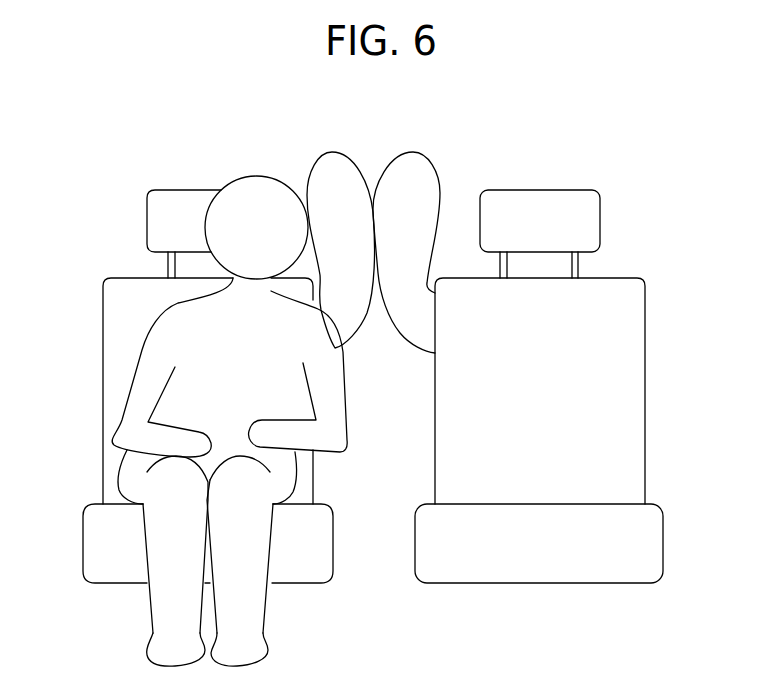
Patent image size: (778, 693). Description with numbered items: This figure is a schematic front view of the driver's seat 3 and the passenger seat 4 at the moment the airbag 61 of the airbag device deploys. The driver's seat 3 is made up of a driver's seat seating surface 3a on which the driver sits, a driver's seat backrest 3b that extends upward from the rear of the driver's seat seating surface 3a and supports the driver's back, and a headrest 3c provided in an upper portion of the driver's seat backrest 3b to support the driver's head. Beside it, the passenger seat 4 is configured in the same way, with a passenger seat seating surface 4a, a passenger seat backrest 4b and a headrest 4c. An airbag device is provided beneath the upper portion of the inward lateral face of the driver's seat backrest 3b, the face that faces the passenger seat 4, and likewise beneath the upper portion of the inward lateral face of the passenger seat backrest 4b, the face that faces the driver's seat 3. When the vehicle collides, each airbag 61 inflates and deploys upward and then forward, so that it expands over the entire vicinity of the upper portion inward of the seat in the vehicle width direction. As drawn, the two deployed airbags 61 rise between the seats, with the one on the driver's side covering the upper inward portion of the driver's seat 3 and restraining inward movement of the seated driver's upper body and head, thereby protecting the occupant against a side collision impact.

The driver's seat 3 is at (87, 310).
The driver's seat seating surface 3a is at (102, 547).
The driver's seat backrest 3b is at (115, 387).
The headrest 3c is at (180, 208).
The passenger seat 4 is at (669, 308).
The passenger seat seating surface 4a is at (648, 550).
The passenger seat backrest 4b is at (627, 432).
The headrest 4c is at (538, 210).
The airbag 61 is at (333, 163).